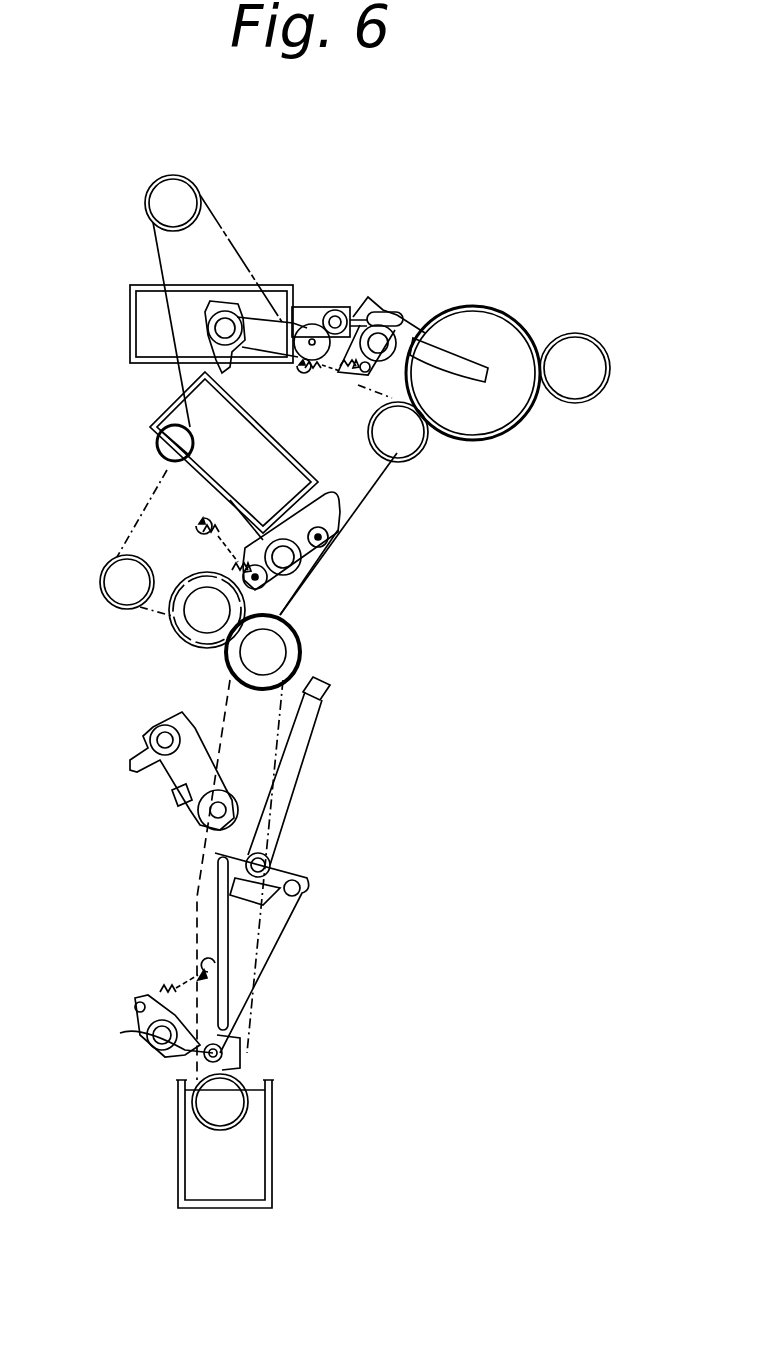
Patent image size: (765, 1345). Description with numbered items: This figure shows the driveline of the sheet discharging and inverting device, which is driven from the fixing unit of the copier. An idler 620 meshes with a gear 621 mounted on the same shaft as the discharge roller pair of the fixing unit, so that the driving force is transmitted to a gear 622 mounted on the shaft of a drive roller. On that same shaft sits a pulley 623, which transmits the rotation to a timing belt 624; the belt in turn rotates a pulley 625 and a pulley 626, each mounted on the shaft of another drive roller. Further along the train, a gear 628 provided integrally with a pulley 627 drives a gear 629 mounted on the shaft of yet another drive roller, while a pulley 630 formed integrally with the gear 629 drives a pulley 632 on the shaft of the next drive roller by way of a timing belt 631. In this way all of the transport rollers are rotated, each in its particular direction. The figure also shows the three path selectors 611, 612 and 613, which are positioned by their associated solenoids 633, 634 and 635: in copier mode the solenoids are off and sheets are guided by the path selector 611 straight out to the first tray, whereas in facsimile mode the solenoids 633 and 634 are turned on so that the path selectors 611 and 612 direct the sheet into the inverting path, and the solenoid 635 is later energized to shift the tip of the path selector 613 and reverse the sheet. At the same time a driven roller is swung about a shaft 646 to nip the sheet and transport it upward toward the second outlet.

The path selector 611 is at (452, 343).
The path selector 612 is at (295, 589).
The path selector 613 is at (318, 745).
The idler 620 is at (512, 310).
The gear 621 is at (602, 340).
The gear 622 is at (383, 470).
The pulley 623 is at (412, 436).
The timing belt 624 is at (223, 221).
The pulley 625 is at (145, 199).
The pulley 626 is at (110, 604).
The pulley 627 is at (190, 617).
The gear 628 is at (190, 640).
The gear 629 is at (305, 628).
The pulley 630 is at (303, 652).
The timing belt 631 is at (210, 723).
The pulley 632 is at (185, 1116).
The solenoid 633 is at (130, 320).
The solenoid 634 is at (268, 425).
The solenoid 635 is at (272, 1120).
The shaft 646 is at (137, 1025).